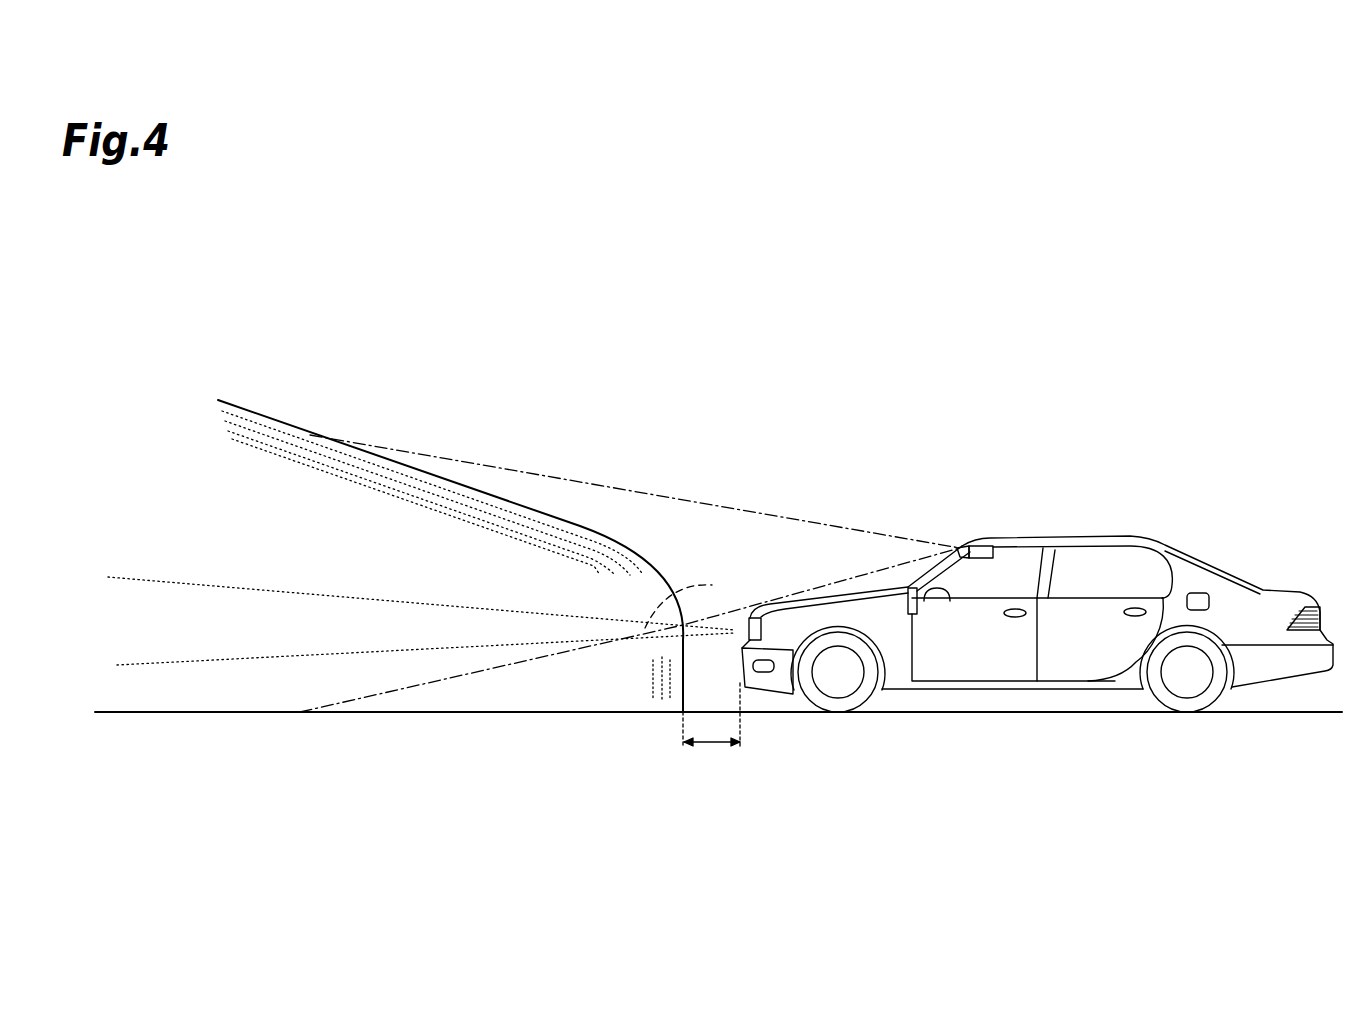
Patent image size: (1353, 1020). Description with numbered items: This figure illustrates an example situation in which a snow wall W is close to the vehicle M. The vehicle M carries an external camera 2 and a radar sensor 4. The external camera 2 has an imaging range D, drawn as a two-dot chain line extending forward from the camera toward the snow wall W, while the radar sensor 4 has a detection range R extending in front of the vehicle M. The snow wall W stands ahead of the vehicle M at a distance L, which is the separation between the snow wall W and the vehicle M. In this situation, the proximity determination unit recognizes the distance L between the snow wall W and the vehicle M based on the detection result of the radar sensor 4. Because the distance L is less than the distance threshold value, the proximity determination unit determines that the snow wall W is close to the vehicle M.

The snow wall W is at (296, 423).
The imaging range D is at (545, 475).
The detection range R is at (699, 588).
The distance L is at (711, 715).
The vehicle M is at (1137, 537).
The external camera 2 is at (970, 545).
The radar sensor 4 is at (748, 630).